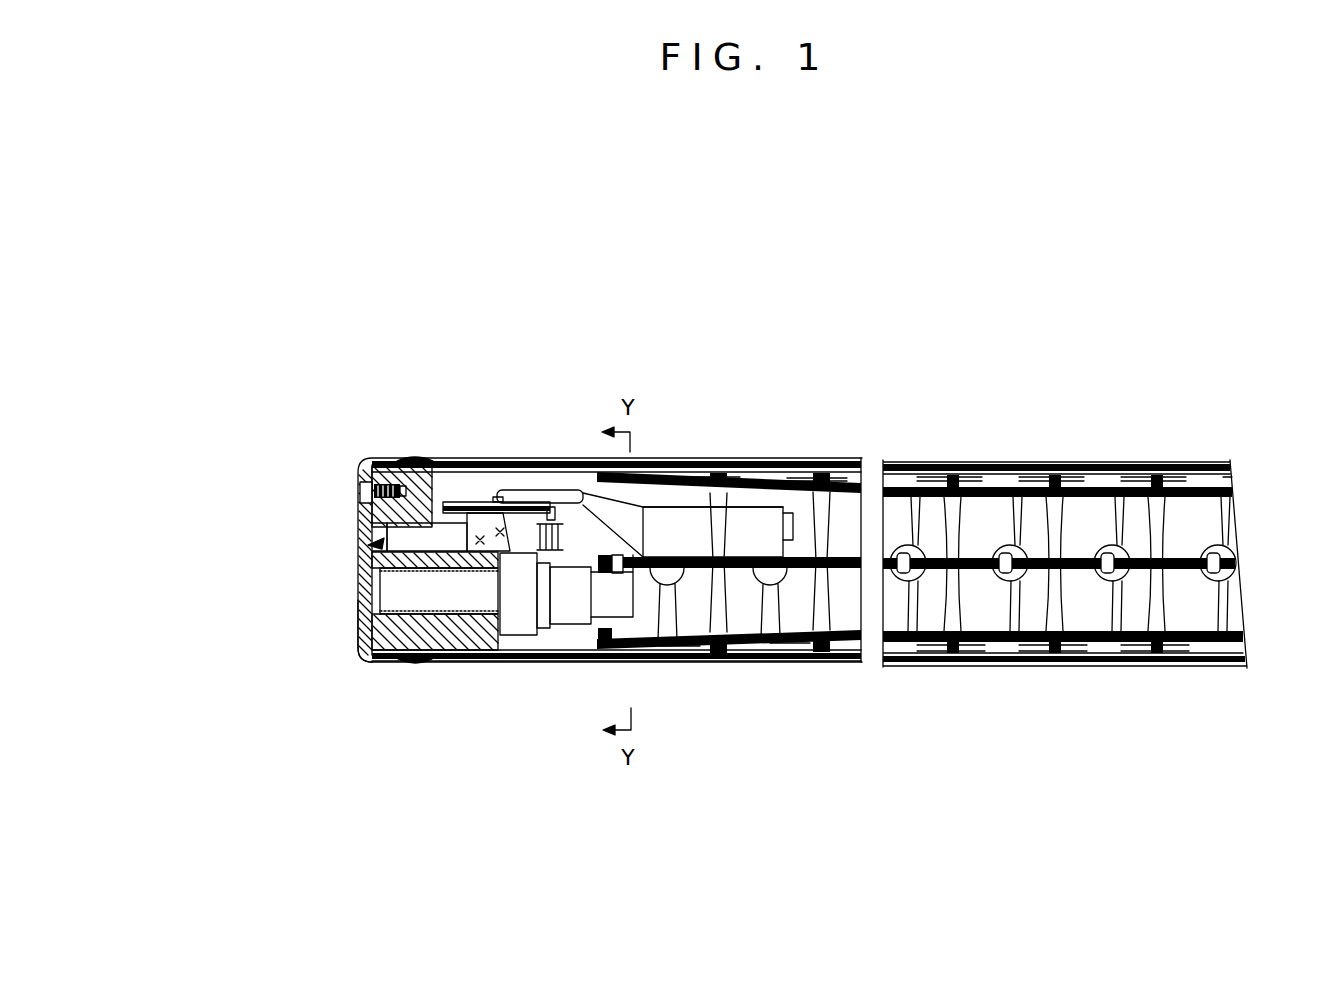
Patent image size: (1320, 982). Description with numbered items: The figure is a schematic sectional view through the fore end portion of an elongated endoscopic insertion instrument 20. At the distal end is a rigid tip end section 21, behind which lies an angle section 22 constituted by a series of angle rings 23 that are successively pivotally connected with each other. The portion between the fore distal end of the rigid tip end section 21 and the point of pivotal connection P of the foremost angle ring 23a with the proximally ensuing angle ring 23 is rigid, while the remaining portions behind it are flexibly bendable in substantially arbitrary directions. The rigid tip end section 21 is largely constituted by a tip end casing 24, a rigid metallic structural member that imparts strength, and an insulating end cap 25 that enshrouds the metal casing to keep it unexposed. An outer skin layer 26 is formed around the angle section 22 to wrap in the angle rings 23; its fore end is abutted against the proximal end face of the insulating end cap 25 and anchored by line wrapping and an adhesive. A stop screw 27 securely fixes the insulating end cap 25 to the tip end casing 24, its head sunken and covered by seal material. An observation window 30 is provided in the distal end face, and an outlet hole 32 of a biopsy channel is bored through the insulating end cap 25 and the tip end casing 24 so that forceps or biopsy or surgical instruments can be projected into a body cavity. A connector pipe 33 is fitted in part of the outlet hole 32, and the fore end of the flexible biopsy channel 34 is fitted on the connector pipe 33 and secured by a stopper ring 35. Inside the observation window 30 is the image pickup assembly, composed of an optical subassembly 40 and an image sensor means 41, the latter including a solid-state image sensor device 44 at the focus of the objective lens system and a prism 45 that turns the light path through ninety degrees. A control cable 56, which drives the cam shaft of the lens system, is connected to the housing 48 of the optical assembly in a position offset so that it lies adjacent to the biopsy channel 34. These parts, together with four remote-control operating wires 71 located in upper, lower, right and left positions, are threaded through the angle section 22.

The endoscopic insertion instrument 20 is at (997, 312).
The rigid tip end section 21 is at (445, 668).
The angle section 22 is at (1070, 664).
The angle rings 23 is at (1143, 513).
The foremost angle ring 23a is at (647, 603).
The tip end casing 24 is at (405, 650).
The insulating end cap 25 is at (360, 648).
The outer skin layer 26 is at (910, 485).
The stop screw 27 is at (371, 460).
The observation window 30 is at (351, 532).
The outlet hole of biopsy channel 32 is at (358, 603).
The connector pipe 33 is at (472, 622).
The biopsy channel 34 is at (573, 620).
The stopper ring 35 is at (522, 628).
The optical subassembly 40 is at (356, 546).
The image sensor means 41 is at (472, 504).
The solid-state image sensor device 44 is at (530, 505).
The prism 45 is at (490, 530).
The housing 48 is at (439, 537).
The control cable 56 is at (625, 570).
The remote-control operating wires 71 is at (1037, 487).
The point of pivotal connection P is at (668, 563).